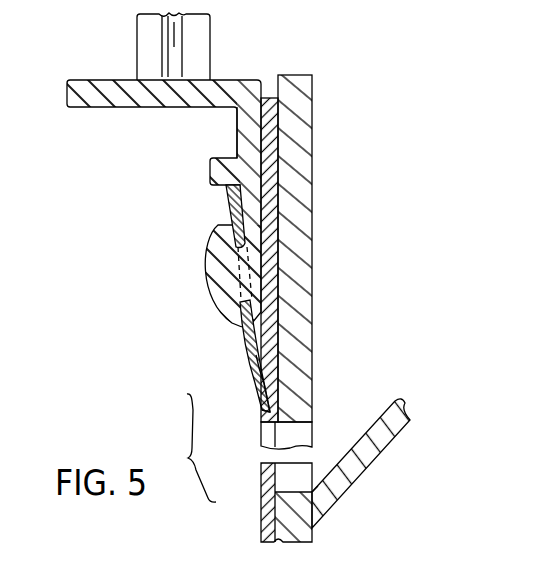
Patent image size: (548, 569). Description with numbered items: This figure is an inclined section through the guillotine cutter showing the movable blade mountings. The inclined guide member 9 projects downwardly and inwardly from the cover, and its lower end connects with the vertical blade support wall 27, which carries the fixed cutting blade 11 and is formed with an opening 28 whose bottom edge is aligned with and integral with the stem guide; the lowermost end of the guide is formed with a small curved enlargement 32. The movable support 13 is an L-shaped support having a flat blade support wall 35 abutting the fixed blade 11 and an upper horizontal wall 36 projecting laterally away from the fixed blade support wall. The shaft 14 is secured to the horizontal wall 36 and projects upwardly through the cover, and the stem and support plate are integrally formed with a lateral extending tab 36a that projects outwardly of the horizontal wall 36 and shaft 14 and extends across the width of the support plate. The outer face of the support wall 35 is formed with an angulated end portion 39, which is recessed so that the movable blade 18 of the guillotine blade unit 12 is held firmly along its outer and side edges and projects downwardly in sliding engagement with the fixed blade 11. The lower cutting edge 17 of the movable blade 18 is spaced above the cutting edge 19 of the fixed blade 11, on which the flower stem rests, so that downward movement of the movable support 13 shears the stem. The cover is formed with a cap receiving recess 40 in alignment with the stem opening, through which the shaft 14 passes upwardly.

The guide member 9 is at (358, 467).
The fixed cutting blade 11 is at (268, 413).
The guillotine blade unit 12 is at (236, 348).
The movable support 13 is at (204, 174).
The shaft 14 is at (203, 33).
The lower cutting edge 17 is at (263, 388).
The movable blade 18 is at (252, 367).
The cutting edge 19 is at (272, 493).
The vertical blade support wall 27 is at (308, 223).
The opening 28 is at (302, 433).
The curved enlargement 32 is at (313, 489).
The flat blade support wall 35 is at (230, 121).
The upper horizontal wall 36 is at (227, 82).
The lateral extending tab 36a is at (119, 57).
The angulated end portion 39 is at (238, 204).
The cap receiving recess 40 is at (210, 262).